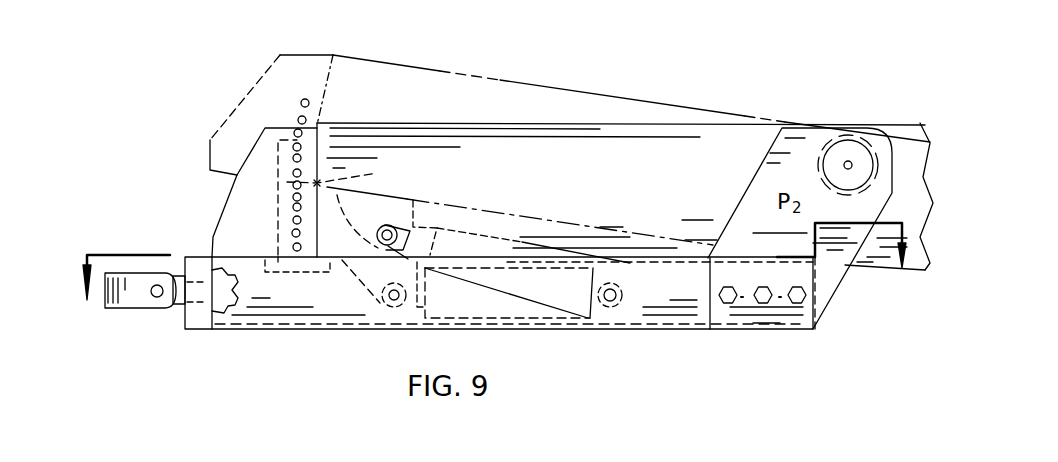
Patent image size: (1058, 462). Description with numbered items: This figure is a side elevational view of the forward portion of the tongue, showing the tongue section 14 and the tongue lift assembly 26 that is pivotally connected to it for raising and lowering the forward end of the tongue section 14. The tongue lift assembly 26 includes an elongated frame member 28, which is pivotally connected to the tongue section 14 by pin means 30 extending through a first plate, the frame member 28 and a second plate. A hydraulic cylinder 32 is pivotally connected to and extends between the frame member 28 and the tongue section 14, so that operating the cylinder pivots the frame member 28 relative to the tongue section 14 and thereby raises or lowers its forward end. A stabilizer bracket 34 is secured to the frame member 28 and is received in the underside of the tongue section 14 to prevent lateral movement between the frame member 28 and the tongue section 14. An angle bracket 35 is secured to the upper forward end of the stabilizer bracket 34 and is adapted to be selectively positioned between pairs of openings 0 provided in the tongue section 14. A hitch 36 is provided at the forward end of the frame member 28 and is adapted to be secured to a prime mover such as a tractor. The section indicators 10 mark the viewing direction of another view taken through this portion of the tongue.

The section line / viewing direction 10 is at (499, 249).
The tongue section 14 is at (717, 123).
The tongue lift assembly 26 is at (347, 335).
The elongated frame member 28 is at (620, 323).
The pin means 30 is at (846, 157).
The hydraulic cylinder 32 is at (492, 303).
The stabilizer bracket 34 is at (277, 193).
The angle bracket 35 is at (348, 177).
The hitch 36 is at (132, 298).
The openings 0 is at (293, 220).